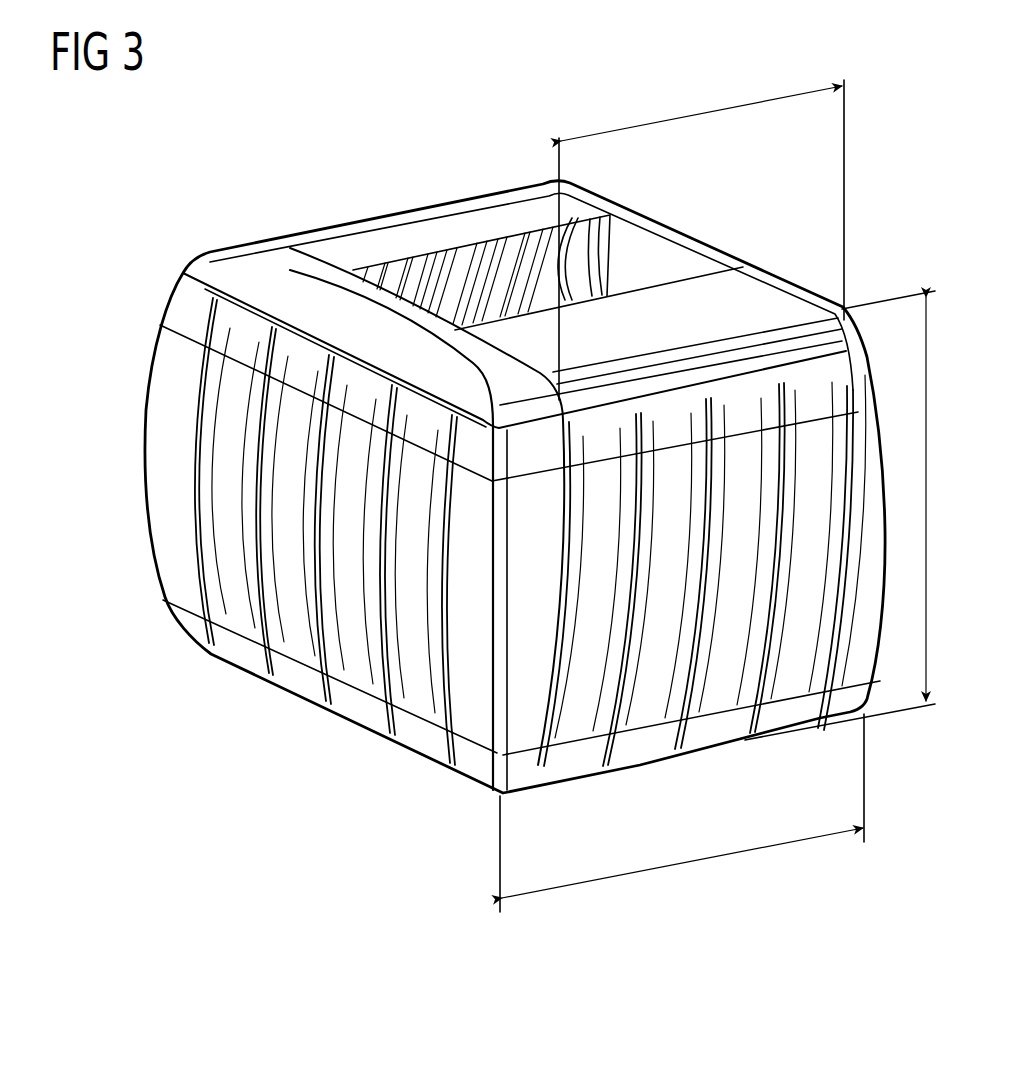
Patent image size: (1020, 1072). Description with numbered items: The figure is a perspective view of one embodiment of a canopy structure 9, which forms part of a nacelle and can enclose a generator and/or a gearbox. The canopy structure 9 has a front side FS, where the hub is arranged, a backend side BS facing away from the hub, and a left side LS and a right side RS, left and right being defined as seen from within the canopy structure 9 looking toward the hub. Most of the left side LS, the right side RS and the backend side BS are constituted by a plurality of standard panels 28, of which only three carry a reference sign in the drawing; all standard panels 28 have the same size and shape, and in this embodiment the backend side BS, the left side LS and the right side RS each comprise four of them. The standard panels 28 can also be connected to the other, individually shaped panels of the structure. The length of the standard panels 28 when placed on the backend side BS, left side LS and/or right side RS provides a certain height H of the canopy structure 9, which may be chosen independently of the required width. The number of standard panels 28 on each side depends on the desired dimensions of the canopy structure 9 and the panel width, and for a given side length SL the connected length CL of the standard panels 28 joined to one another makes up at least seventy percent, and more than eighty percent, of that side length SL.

The canopy structure 9 is at (515, 425).
The standard panels 28 is at (410, 278).
The left side LS is at (320, 195).
The front side FS is at (734, 210).
The backend side BS is at (205, 757).
The right side RS is at (790, 869).
The connected length CL is at (701, 237).
The side length SL is at (682, 813).
The height H is at (847, 515).